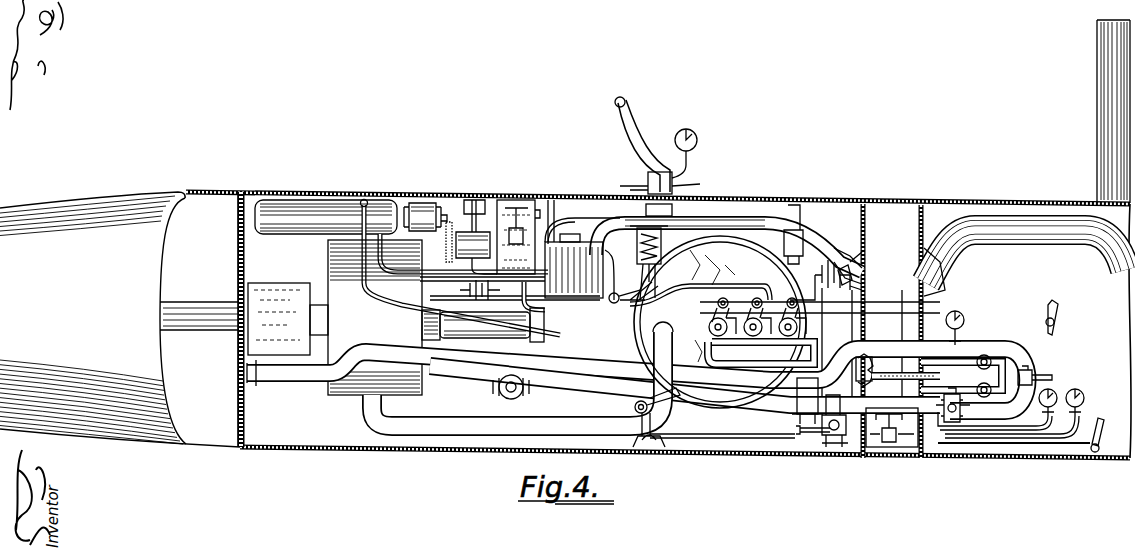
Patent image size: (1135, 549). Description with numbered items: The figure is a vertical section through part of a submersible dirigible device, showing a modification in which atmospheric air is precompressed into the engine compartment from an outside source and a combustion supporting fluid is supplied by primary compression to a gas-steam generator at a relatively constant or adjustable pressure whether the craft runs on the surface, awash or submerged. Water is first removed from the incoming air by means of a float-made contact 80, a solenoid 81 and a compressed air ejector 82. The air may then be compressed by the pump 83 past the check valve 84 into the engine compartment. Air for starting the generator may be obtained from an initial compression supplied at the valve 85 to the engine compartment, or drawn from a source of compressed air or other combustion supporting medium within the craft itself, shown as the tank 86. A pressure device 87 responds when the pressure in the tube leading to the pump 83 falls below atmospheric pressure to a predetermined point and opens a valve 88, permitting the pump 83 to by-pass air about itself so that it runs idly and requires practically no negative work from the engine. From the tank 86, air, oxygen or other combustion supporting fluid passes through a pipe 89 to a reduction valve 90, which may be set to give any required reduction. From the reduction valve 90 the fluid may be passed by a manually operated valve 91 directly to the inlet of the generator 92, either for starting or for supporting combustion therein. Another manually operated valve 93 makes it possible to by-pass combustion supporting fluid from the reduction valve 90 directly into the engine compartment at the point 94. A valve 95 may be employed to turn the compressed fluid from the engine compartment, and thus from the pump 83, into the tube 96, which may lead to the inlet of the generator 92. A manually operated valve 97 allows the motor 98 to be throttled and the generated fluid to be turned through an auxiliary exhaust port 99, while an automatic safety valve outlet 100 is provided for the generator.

The float-made contact 80 is at (908, 450).
The solenoid 81 is at (803, 382).
The compressed air ejector 82 is at (836, 447).
The pump 83 is at (572, 290).
The check valve 84 is at (512, 399).
The valve 85 is at (692, 228).
The tank 86 is at (120, 319).
The pressure device 87 is at (728, 230).
The valve 88 is at (612, 290).
The pipe 89 is at (702, 392).
The reduction valve 90 is at (958, 422).
The manually operated valve 91 is at (1022, 380).
The generator 92 is at (752, 330).
The manually operated valve 93 is at (998, 385).
The point 94 is at (856, 375).
The valve 95 is at (982, 358).
The tube 96 is at (935, 345).
The manually operated valve 97 is at (662, 400).
The motor 98 is at (396, 317).
The auxiliary exhaust port 99 is at (650, 440).
The automatic safety valve outlet 100 is at (805, 240).